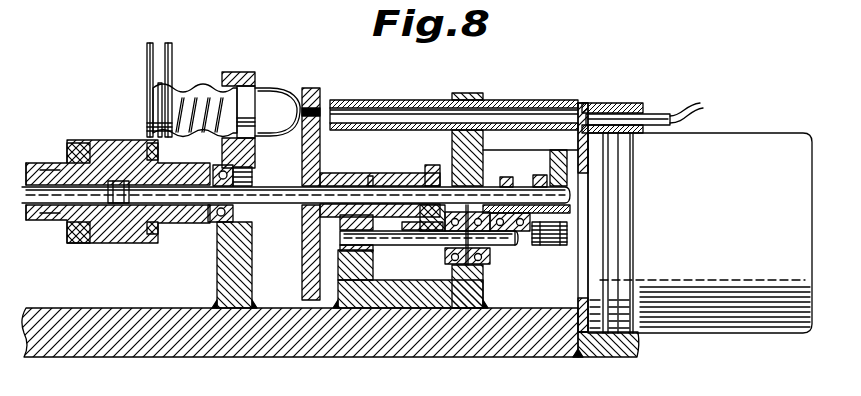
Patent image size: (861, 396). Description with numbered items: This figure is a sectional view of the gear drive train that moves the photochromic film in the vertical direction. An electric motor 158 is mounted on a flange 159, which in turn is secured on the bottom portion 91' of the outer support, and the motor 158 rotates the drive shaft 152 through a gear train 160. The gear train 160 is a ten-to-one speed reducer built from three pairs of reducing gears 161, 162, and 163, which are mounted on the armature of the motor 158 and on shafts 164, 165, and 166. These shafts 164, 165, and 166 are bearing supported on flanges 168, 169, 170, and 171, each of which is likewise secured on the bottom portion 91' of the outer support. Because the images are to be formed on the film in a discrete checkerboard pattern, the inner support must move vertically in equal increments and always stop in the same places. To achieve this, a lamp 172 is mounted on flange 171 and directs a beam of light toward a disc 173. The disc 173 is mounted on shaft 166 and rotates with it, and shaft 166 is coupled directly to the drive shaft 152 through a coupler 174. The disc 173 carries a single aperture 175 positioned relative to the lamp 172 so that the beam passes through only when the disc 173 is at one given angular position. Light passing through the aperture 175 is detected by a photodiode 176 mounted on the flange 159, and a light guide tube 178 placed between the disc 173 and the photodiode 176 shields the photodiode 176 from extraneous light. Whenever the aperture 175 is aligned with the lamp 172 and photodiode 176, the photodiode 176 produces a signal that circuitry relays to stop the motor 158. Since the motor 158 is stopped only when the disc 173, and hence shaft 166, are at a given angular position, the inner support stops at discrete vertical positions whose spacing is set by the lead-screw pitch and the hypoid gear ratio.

The bottom portion of the outer support 91' is at (330, 341).
The drive shaft 152 is at (27, 165).
The electric motor 158 is at (722, 133).
The flange 159 is at (578, 300).
The gear train 160 is at (395, 158).
The reducing gears 161 is at (546, 241).
The reducing gears 162 is at (497, 204).
The reducing gears 163 is at (433, 250).
The shaft 164 is at (527, 190).
The shaft 165 is at (514, 243).
The shaft 166 is at (283, 204).
The flange 168 is at (572, 162).
The flange 169 is at (452, 145).
The flange 170 is at (410, 240).
The flange 171 is at (252, 262).
The lamp 172 is at (279, 92).
The disc 173 is at (302, 160).
The coupler 174 is at (114, 140).
The aperture 175 is at (320, 108).
The photodiode 176 is at (648, 112).
The light guide tube 178 is at (565, 100).